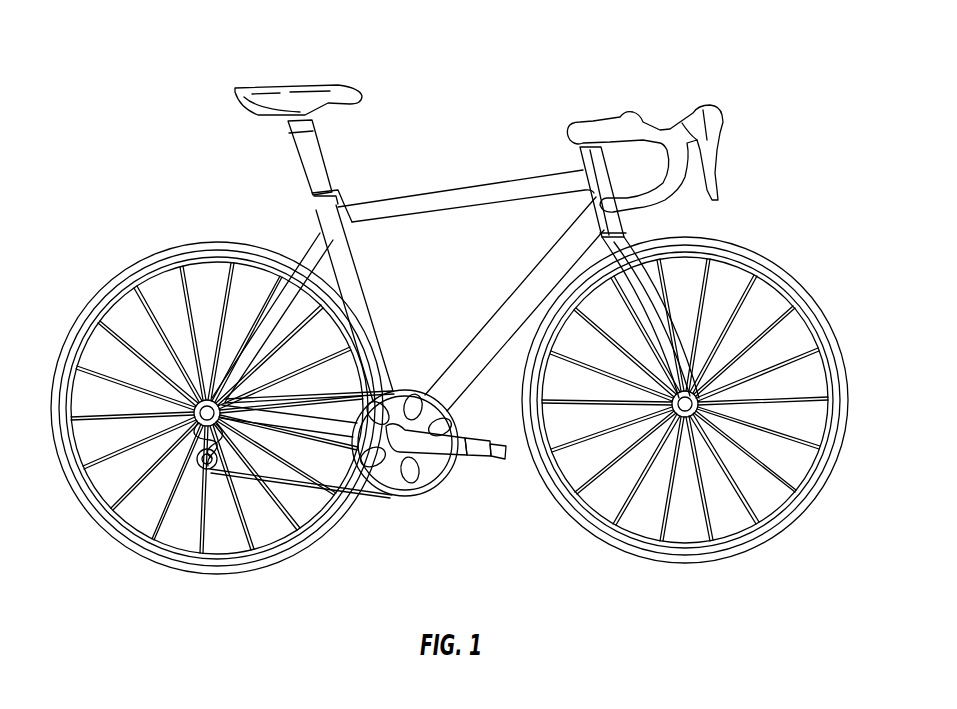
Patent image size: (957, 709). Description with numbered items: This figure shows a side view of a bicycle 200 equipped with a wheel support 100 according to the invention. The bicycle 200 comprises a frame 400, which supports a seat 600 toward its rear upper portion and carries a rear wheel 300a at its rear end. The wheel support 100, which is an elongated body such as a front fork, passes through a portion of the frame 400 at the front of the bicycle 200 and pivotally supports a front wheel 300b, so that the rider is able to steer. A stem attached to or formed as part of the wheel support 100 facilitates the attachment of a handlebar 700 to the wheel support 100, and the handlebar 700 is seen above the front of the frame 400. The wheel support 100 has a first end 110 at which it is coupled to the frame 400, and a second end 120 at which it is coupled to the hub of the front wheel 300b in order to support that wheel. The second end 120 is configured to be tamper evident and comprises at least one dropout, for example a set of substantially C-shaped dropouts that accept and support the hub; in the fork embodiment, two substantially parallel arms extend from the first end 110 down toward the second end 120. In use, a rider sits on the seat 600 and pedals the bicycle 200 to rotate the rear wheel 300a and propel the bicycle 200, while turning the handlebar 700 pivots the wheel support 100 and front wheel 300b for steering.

The bicycle 200 is at (757, 63).
The frame 400 is at (432, 205).
The seat 600 is at (277, 103).
The handlebar 700 is at (625, 120).
The wheel support 100 is at (641, 303).
The first end 110 is at (608, 246).
The second end 120 is at (788, 500).
The rear wheel 300a is at (78, 337).
The front wheel 300b is at (598, 523).